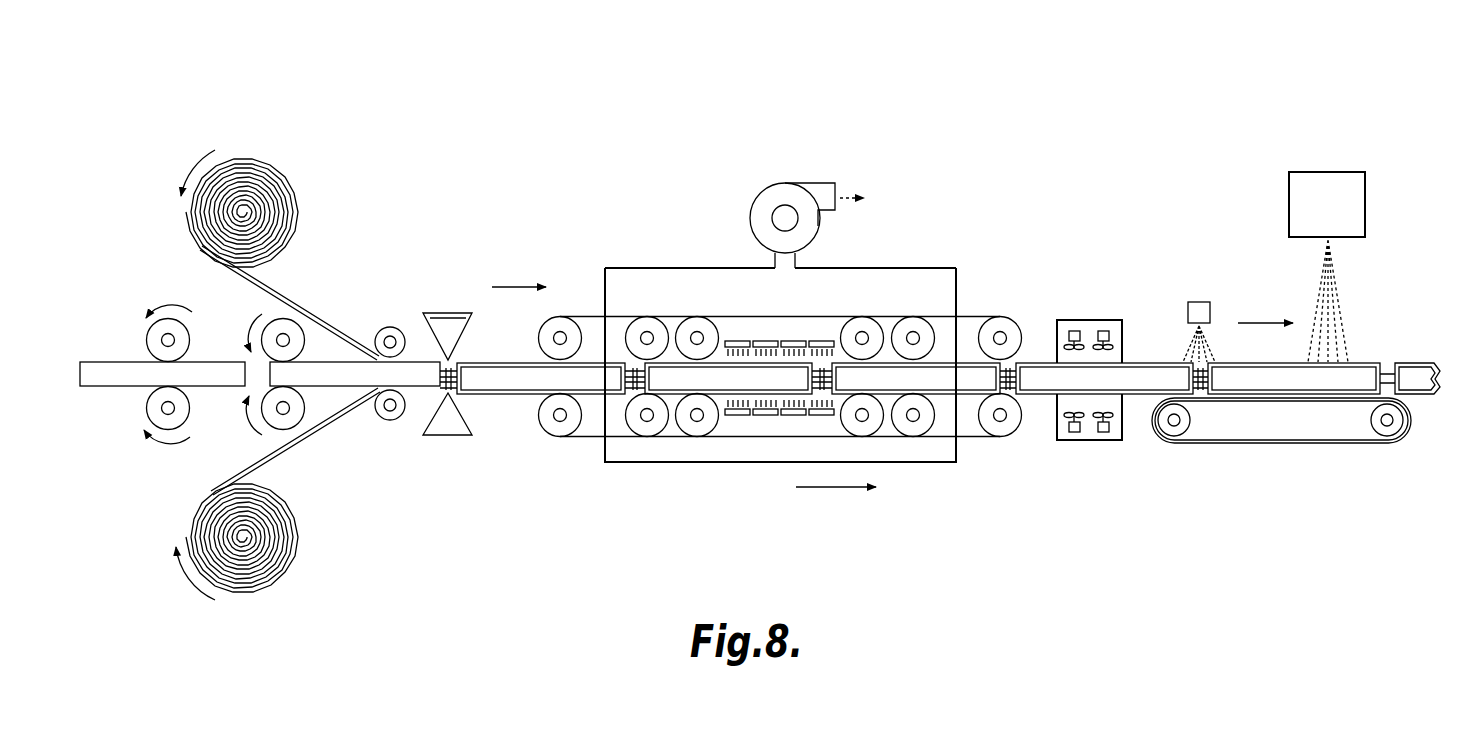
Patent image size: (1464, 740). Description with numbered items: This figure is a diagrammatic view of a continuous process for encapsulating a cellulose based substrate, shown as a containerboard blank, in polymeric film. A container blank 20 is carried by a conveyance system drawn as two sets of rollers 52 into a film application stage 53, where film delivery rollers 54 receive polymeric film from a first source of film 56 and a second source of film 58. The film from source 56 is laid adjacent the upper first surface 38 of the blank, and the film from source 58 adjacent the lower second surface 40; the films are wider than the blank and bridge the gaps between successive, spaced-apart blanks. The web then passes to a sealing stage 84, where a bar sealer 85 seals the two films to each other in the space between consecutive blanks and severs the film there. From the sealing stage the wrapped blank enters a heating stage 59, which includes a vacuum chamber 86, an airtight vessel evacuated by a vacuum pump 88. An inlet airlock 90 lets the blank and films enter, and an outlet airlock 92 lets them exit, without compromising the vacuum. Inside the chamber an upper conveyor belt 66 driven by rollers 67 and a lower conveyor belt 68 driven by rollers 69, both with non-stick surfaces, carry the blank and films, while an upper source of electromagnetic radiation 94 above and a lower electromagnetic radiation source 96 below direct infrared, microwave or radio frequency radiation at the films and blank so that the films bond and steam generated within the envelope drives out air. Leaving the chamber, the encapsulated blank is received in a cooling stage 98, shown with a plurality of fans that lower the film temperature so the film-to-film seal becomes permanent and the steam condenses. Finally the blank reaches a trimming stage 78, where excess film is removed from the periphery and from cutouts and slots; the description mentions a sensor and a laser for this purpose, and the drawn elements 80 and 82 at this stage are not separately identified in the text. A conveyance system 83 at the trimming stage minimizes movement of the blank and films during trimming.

The container blank 20 is at (110, 362).
The upper first surface 38 is at (330, 362).
The lower second surface 40 is at (332, 388).
The rollers 52 is at (147, 333).
The film application stage 53 is at (283, 115).
The film delivery rollers 54 is at (393, 327).
The first source of film 56 is at (282, 172).
The second source of film 58 is at (290, 572).
The heating stage 59 is at (690, 216).
The upper conveyor belt 66 is at (745, 315).
The rollers 67 is at (680, 318).
The lower conveyor belt 68 is at (725, 440).
The rollers 69 is at (680, 440).
The trimming stage 78 is at (1257, 163).
The spray nozzle 80 is at (1200, 302).
The print head 82 is at (1340, 172).
The conveyance system 83 is at (1285, 443).
The sealing stage 84 is at (440, 286).
The bar sealer 85 is at (444, 313).
The vacuum chamber 86 is at (870, 268).
The vacuum pump 88 is at (805, 185).
The inlet airlock 90 is at (592, 316).
The outlet airlock 92 is at (965, 316).
The upper source of electromagnetic radiation 94 is at (805, 318).
The lower electromagnetic radiation source 96 is at (792, 437).
The cooling stage 98 is at (1096, 310).